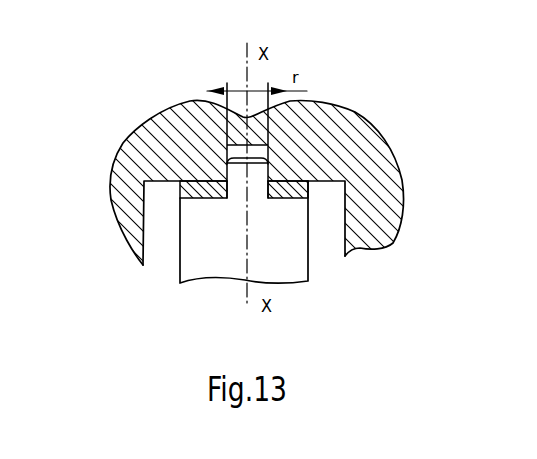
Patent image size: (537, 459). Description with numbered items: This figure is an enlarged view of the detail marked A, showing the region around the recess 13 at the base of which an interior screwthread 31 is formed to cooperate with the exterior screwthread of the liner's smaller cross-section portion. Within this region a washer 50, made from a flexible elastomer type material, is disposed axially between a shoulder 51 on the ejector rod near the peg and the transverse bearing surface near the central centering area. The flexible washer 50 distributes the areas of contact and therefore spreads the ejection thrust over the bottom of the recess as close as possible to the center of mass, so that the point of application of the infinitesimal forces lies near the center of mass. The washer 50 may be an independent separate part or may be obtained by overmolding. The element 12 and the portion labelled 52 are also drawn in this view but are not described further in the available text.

The head region of sealing plug A is at (152, 128).
The plug shank 12 is at (310, 252).
The recess 13 is at (158, 253).
The interior screwthread 31 is at (268, 170).
The washer 50 is at (274, 245).
The shoulder 51 is at (207, 187).
The right ring half 52 is at (284, 197).